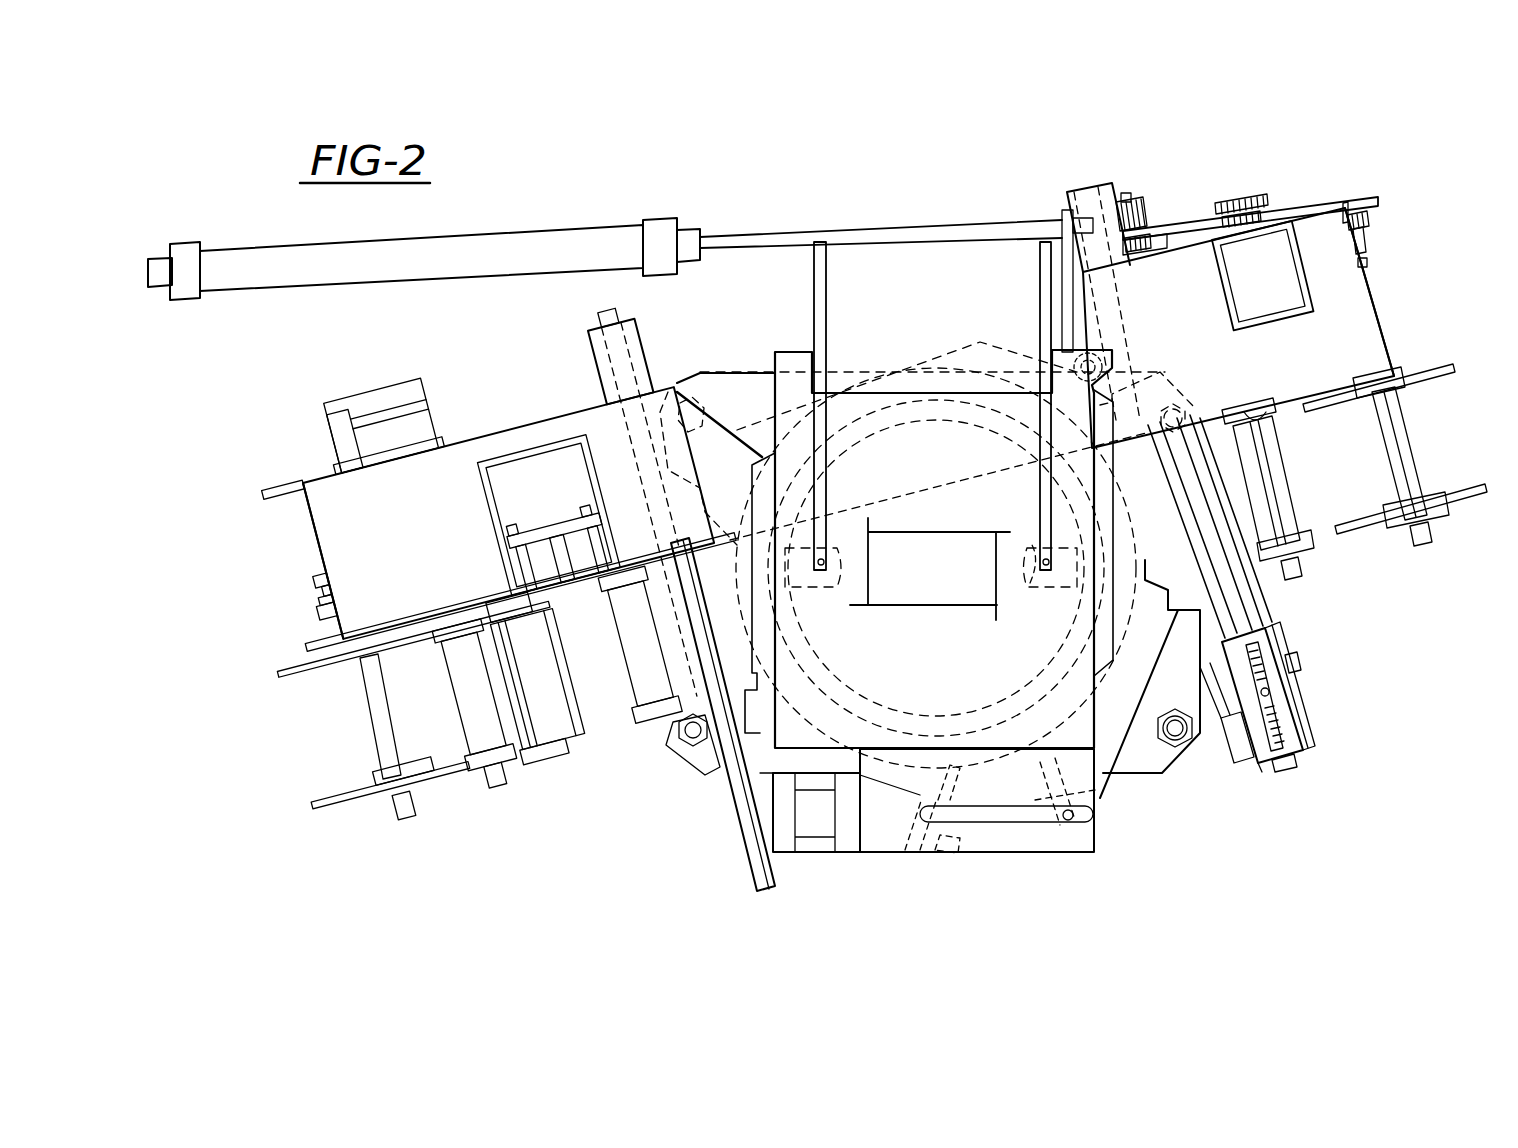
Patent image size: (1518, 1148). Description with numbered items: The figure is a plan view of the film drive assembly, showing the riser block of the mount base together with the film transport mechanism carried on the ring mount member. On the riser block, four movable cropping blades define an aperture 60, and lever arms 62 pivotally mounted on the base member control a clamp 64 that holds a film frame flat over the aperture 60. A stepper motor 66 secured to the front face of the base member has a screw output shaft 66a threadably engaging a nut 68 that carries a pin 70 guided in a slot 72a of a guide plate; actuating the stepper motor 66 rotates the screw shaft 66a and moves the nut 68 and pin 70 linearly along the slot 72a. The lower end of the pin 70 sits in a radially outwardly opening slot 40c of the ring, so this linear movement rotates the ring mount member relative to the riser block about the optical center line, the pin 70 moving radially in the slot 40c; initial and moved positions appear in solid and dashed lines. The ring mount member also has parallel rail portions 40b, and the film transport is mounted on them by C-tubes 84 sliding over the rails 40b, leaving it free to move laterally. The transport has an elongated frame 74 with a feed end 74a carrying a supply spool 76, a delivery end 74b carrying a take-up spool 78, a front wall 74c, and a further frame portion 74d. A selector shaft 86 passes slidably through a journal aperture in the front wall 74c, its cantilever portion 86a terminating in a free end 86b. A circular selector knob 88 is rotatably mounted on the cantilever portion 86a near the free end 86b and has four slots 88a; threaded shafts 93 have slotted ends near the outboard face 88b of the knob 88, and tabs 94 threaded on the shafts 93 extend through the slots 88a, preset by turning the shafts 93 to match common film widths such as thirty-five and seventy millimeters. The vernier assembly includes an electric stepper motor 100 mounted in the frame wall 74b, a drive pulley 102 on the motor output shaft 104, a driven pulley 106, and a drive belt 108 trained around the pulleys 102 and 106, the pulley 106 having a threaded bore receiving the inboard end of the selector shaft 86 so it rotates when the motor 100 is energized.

The rail portions 40b is at (612, 304).
The slot 40c is at (1224, 712).
The aperture 60 is at (954, 597).
The lever arms 62 is at (814, 306).
The clamp 64 is at (1040, 583).
The stepper motor 66 is at (806, 848).
The screw output shaft 66a is at (992, 812).
The nut 68 is at (1071, 822).
The pin 70 is at (1085, 818).
The slot 72a is at (1035, 818).
The frame 74 is at (528, 421).
The feed end 74a is at (1376, 312).
The delivery end 74b is at (318, 532).
The front wall 74c is at (1300, 396).
The frame plate 74d is at (1206, 341).
The supply spool 76 is at (1416, 457).
The take-up spool 78 is at (380, 744).
The C-tubes 84 is at (598, 355).
The selector shaft 86 is at (1255, 606).
The cantilever portion 86a is at (1238, 518).
The free end 86b is at (1283, 772).
The selector knob 88 is at (1308, 746).
The slots 88a is at (1282, 692).
The outboard face 88b is at (1262, 772).
The threaded shafts 93 is at (1280, 714).
The tabs 94 is at (1294, 662).
The stepper motor 100 is at (1287, 258).
The drive pulley 102 is at (1266, 196).
The stepper motor output shaft 104 is at (1257, 224).
The driven pulley 106 is at (1145, 204).
The drive belt 108 is at (1203, 216).